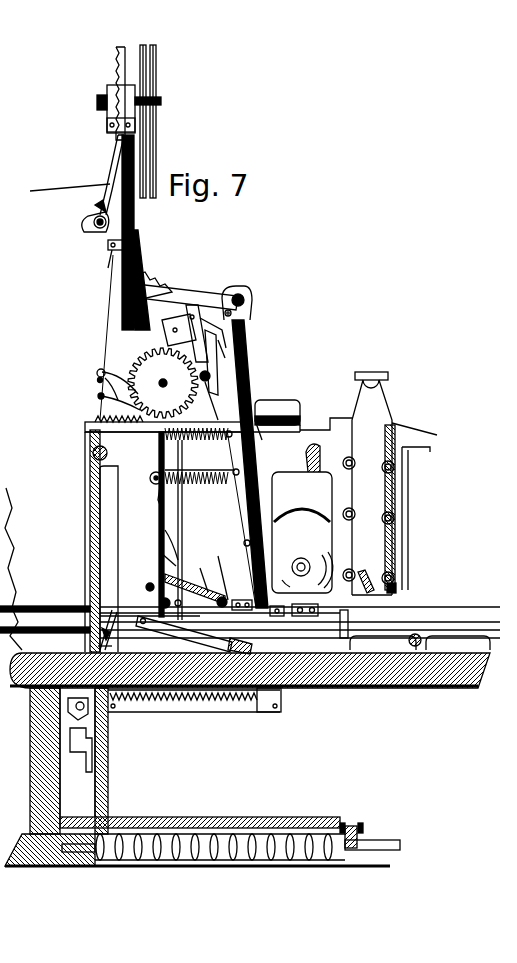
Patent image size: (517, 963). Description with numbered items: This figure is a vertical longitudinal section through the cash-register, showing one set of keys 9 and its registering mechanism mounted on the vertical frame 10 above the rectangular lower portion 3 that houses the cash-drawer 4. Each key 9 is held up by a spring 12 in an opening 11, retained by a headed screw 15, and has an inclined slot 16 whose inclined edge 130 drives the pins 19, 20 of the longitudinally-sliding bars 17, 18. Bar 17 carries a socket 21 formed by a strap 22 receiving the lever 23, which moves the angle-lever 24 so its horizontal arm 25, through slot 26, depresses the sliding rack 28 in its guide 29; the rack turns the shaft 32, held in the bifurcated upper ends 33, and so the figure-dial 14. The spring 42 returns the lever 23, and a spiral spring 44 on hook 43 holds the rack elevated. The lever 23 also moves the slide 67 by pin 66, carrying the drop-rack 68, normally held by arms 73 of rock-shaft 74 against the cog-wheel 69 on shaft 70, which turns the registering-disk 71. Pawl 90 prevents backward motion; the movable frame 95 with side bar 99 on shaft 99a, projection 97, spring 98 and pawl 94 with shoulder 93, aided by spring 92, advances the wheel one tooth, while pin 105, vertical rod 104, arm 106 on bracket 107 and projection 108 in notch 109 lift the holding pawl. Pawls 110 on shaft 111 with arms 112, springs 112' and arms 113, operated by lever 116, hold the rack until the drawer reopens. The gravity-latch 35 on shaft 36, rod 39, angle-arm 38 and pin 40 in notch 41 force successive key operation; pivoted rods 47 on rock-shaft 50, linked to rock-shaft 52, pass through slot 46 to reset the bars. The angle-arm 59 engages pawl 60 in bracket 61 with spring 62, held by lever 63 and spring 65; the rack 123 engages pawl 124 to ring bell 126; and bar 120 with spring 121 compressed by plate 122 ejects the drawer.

The upper ends of the vertical frame 33 is at (100, 100).
The shaft 32 is at (107, 118).
The figure-dial 14 is at (157, 137).
The spring-actuated pawl 110 is at (108, 160).
The arm 113 is at (56, 192).
The spring 112' is at (82, 197).
The rearwardly-extending arm 112 is at (74, 217).
The transverse shaft 111 is at (93, 226).
The guide 29 is at (108, 248).
The sliding rack 28 is at (118, 257).
The spring 98 is at (146, 283).
The socket 21 is at (125, 325).
The slot 26 is at (158, 280).
The horizontal arm 25 is at (210, 297).
The side bar 99 is at (246, 292).
The transverse shaft 99a is at (234, 313).
The angle-lever 24 is at (250, 390).
The lateral projection or hook 43 is at (252, 418).
The movable frame 95 is at (196, 304).
The lateral projection 97 is at (206, 300).
The transverse pin or bar 105 is at (200, 326).
The pawl 94 is at (258, 322).
The spring 92 is at (258, 326).
The shoulder or projection 93 is at (216, 376).
The spiral spring 44 is at (236, 403).
The shaft 70 is at (163, 380).
The cog-wheel 69 is at (118, 381).
The spring-actuated pawl 90 is at (96, 380).
The registering-disk 71 is at (100, 398).
The drop-rack 68 is at (192, 438).
The spring 12 is at (277, 412).
The lever 116 is at (92, 510).
The arm 73 is at (153, 476).
The rock-shaft 74 is at (156, 470).
The slide 67 is at (195, 440).
The pin 66 is at (226, 438).
The spring 42 is at (214, 484).
The vertical rod 104 is at (182, 512).
The notch 109 is at (165, 531).
The lateral projection 108 is at (160, 553).
The pivoted rod 47 is at (165, 577).
The arm 106 is at (146, 587).
The rock-shaft 50 is at (160, 603).
The laterally-extending pin 40 is at (220, 562).
The notch 41 is at (200, 568).
The gravity-latch 35 is at (222, 597).
The angle-arm 38 is at (228, 600).
The longitudinally-sliding bar 17 is at (95, 604).
The longitudinally-sliding bar 18 is at (96, 622).
The bracket 107 is at (100, 624).
The spiral spring 65 is at (100, 632).
The lever 63 is at (98, 647).
The bell 126 is at (304, 512).
The lever 23 is at (272, 566).
The metallic strap 22 is at (299, 581).
The longitudinal slot 46 is at (282, 612).
The key 9 is at (368, 483).
The vertical frame 10 is at (398, 493).
The opening 11 is at (410, 563).
The washer or headed screw 15 is at (385, 518).
The inclined edge 130 is at (368, 574).
The inclined slot 16 is at (400, 582).
The pin or roller 19 is at (408, 596).
The pin or roller 20 is at (390, 632).
The rock-shaft 52 is at (414, 648).
The rectangular lower portion 3 is at (376, 684).
The pivoted pawl 124 is at (340, 686).
The rod 39 is at (214, 650).
The transverse shaft 36 is at (240, 655).
The cash-drawer 4 is at (172, 783).
The rack 123 is at (218, 702).
The pawl 60 is at (92, 724).
The angle-arm 59 is at (94, 750).
The bracket 61 is at (60, 710).
The spiral spring 62 is at (60, 722).
The spiral spring 121 is at (262, 818).
The plate 122 is at (366, 826).
The longitudinal bar 120 is at (400, 848).